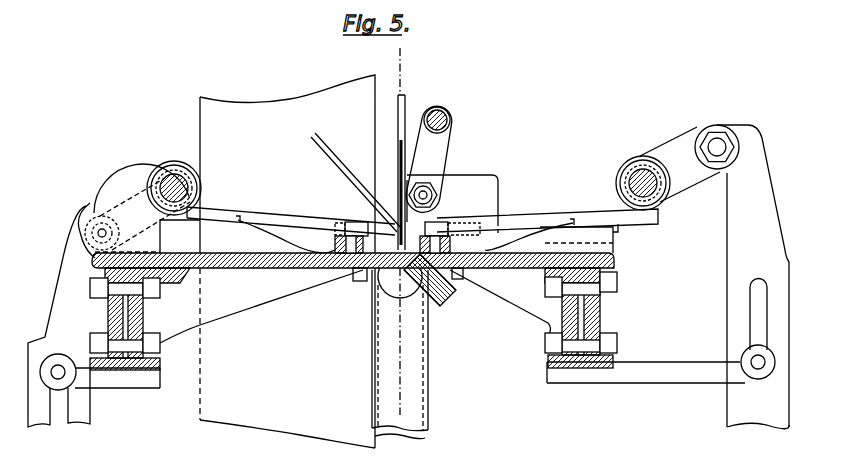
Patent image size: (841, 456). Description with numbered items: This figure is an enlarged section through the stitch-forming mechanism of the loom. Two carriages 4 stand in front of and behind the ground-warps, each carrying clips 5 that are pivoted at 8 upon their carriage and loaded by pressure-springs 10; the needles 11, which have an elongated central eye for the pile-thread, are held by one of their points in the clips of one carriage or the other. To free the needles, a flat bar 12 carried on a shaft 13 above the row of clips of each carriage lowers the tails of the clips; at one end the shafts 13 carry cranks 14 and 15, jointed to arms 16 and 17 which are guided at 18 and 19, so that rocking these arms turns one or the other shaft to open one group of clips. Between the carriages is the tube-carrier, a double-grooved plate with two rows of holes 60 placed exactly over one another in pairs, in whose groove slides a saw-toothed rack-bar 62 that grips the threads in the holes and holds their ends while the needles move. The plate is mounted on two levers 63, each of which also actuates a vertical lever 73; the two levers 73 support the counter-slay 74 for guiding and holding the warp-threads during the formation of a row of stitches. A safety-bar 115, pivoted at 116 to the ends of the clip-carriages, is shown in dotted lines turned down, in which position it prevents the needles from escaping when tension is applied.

The carriage 4 is at (353, 278).
The clip 5 is at (422, 221).
The clip pivot 8 is at (348, 222).
The pressure-spring 10 is at (405, 234).
The needle 11 is at (395, 222).
The flat bar 12 is at (163, 203).
The shaft 13 is at (195, 165).
The crank 14 is at (163, 222).
The crank 15 is at (95, 210).
The arm 16 is at (753, 277).
The arm 17 is at (59, 316).
The guide 18 is at (752, 363).
The guide 19 is at (100, 372).
The holes 60 is at (475, 285).
The rack-bar 62 is at (445, 219).
The lever 63 is at (438, 299).
The vertical lever 73 is at (400, 353).
The counter-slay 74 is at (400, 283).
The safety-bar 115 is at (455, 135).
The safety-bar pivot 116 is at (440, 195).